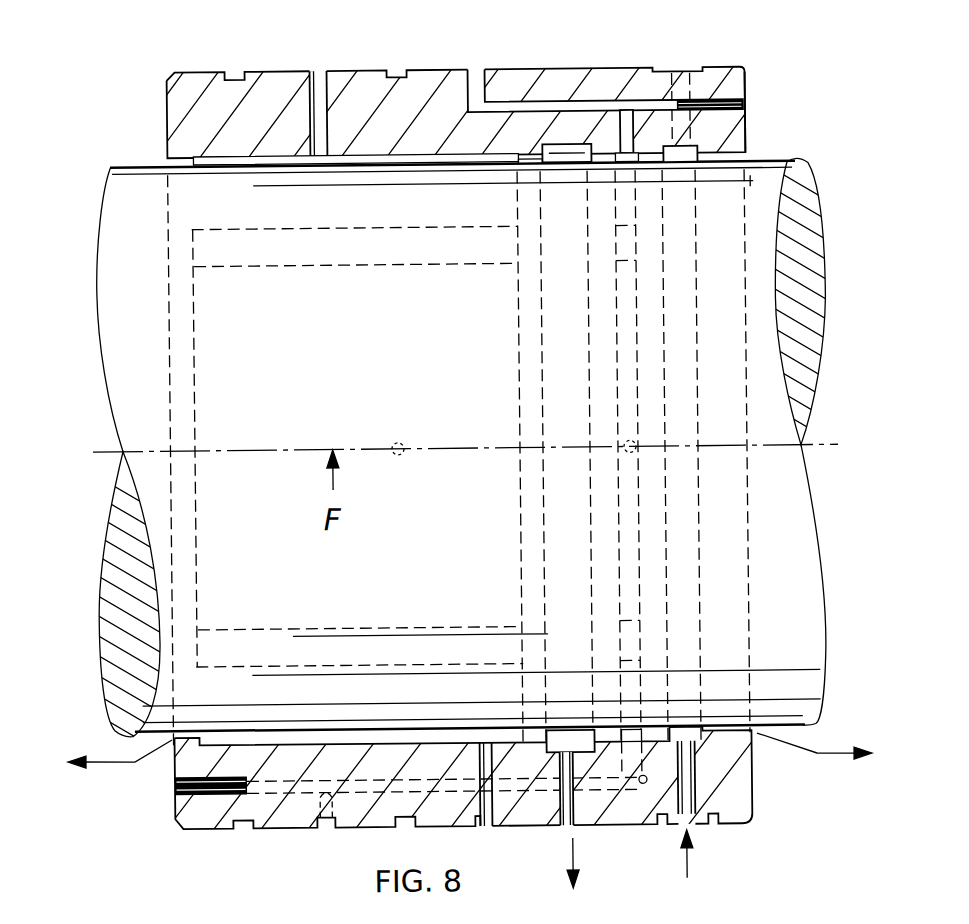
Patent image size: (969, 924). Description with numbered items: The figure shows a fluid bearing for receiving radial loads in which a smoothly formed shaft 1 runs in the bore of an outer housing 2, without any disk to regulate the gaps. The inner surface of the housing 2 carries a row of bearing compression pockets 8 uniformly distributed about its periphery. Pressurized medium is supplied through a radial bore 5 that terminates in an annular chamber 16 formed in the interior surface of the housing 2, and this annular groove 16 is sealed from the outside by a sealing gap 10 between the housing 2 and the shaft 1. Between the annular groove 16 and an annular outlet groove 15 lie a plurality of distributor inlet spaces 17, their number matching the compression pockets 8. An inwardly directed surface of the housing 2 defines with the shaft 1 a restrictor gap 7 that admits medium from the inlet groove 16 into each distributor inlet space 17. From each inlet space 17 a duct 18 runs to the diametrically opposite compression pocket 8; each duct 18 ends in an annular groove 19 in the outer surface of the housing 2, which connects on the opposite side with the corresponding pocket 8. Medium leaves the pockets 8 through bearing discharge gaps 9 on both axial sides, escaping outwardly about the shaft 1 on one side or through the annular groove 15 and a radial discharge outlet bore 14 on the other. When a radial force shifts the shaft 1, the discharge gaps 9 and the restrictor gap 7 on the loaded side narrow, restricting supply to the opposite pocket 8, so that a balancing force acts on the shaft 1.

The shaft 1 is at (130, 184).
The housing 2 is at (277, 70).
The radial bore 5 is at (686, 820).
The restrictor gap 7 is at (637, 147).
The bearing compression pocket 8 is at (369, 154).
The bearing discharge gap 9 is at (194, 159).
The sealing gap 10 is at (750, 160).
The radial discharge outlet bore 14 is at (562, 829).
The annular groove 15 is at (587, 754).
The annular chamber 16 is at (693, 152).
The distributor inlet space 17 is at (630, 128).
The duct 18 is at (518, 110).
The annular groove 19 is at (484, 70).